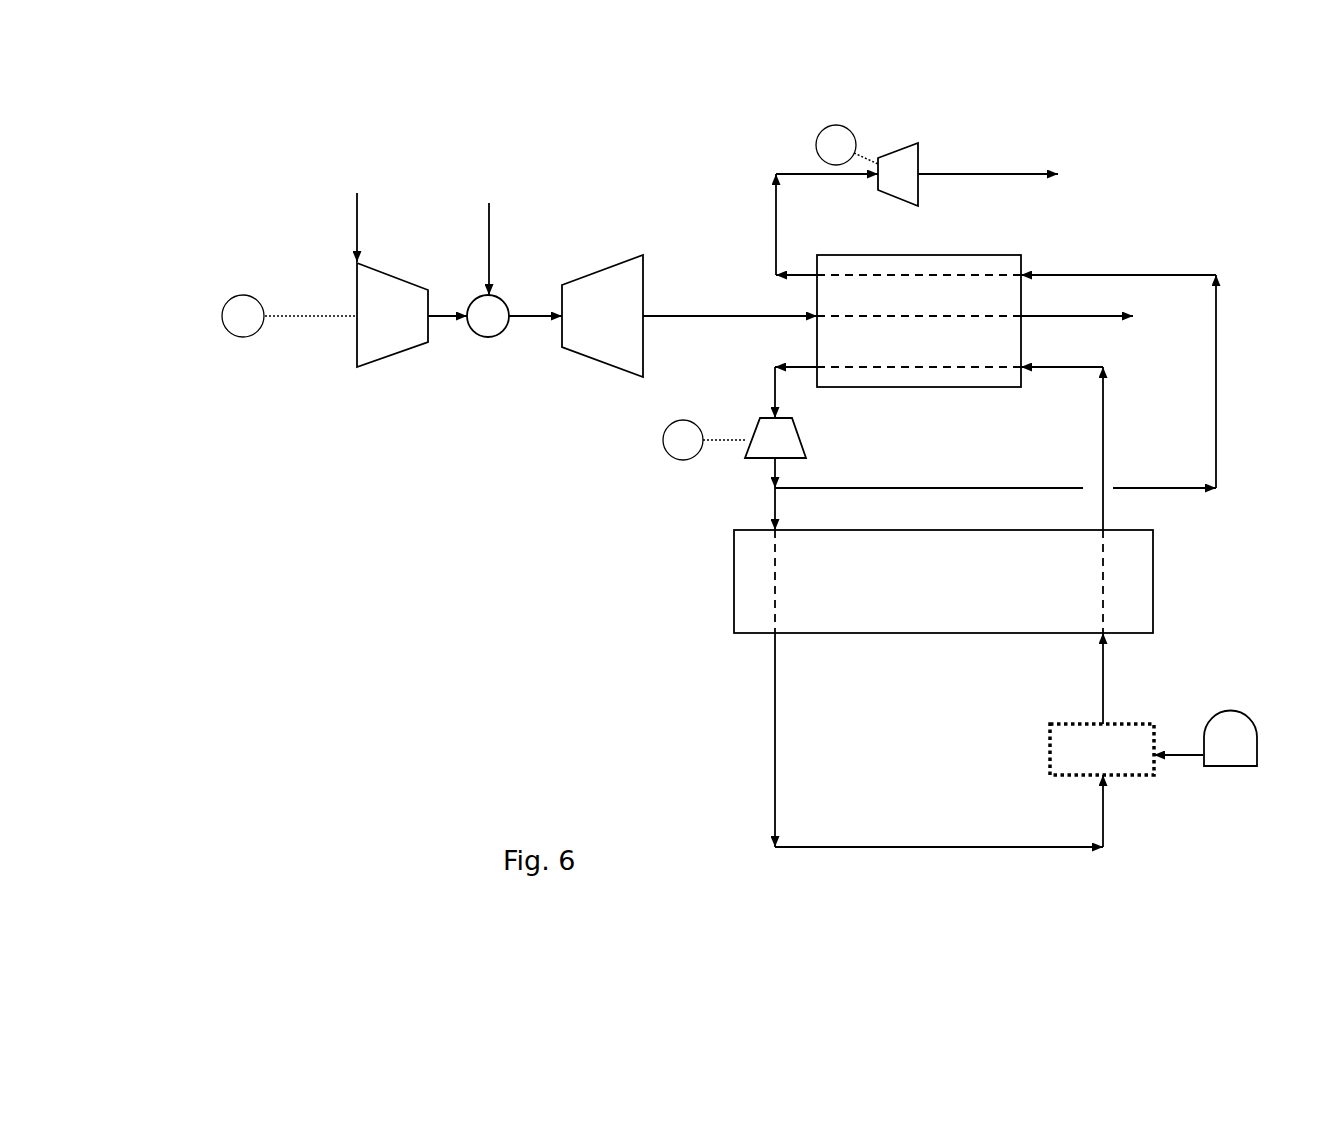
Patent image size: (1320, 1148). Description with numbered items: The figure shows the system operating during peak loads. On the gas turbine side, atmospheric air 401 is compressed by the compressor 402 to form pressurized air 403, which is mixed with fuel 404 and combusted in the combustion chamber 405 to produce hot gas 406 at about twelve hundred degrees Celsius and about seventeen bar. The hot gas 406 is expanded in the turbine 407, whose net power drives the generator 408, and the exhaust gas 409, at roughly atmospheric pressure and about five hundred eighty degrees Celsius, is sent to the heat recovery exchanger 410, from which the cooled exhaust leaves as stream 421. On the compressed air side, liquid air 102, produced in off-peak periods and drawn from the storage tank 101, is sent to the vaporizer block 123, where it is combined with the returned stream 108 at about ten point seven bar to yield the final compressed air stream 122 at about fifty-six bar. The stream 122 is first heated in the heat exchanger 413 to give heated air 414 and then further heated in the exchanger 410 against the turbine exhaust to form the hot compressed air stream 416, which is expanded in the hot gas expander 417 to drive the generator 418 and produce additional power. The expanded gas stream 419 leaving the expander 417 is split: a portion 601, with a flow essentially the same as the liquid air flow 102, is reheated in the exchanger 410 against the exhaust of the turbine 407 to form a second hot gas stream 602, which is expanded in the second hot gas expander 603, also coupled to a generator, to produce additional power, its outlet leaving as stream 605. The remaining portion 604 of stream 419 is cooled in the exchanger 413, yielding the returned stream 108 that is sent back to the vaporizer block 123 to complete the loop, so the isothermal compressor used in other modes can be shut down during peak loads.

The atmospheric air 401 is at (357, 223).
The compressor 402 is at (367, 347).
The pressurized air 403 is at (448, 313).
The fuel 404 is at (492, 243).
The combustion chamber 405 is at (490, 325).
The hot gas 406 is at (522, 317).
The turbine 407 is at (592, 347).
The generator 408 is at (233, 325).
The exhaust gas 409 is at (715, 313).
The heat recovery exchanger 410 is at (918, 253).
The heat exchanger 413 is at (755, 590).
The heated air 414 is at (1103, 438).
The hot compressed air stream 416 is at (773, 385).
The hot gas expander 417 is at (785, 438).
The generator 418 is at (673, 448).
The expanded gas stream 419 is at (767, 468).
The flue gas outlet stream 421 is at (1083, 317).
The portion of expanded gas stream 601 is at (1010, 488).
The second hot gas stream 602 is at (775, 232).
The second hot gas expander 603 is at (907, 153).
The remaining portion of stream 419 604 is at (777, 500).
The expander outlet stream 605 is at (990, 172).
The storage tank 101 is at (1235, 723).
The liquid air 102 is at (1172, 757).
The returned compressed air stream 108 is at (897, 848).
The final compressed air stream 122 is at (1103, 685).
The vaporizer block 123 is at (1060, 745).